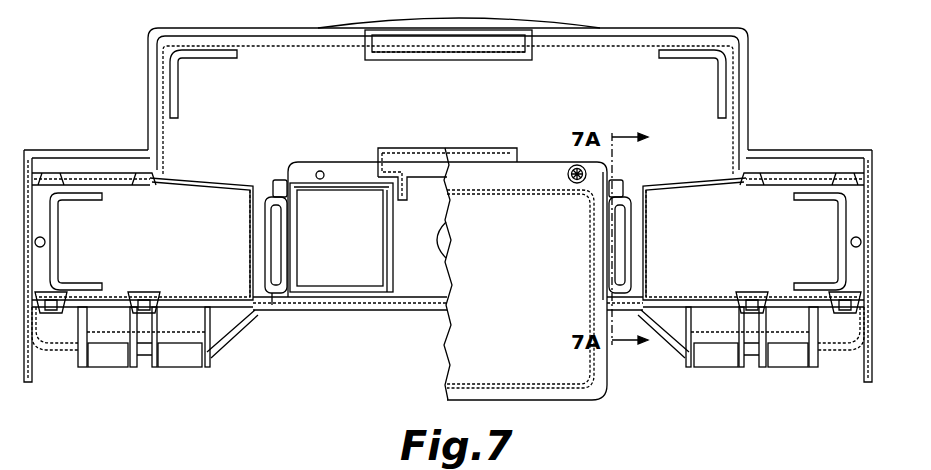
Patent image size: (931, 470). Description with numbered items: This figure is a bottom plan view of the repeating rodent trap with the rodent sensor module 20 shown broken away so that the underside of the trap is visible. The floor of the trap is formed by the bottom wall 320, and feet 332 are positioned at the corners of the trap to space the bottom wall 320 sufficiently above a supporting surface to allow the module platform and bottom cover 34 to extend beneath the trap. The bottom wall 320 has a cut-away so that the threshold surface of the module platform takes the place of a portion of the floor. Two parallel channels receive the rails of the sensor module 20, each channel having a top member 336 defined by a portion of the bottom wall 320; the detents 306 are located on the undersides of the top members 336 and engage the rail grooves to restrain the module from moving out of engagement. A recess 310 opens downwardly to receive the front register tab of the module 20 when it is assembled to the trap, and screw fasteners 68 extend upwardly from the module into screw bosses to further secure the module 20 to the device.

The sensor module 20 is at (580, 401).
The bottom cover 34 is at (444, 356).
The screw fasteners 68 is at (571, 168).
The detent 306 is at (275, 208).
The recess 310 is at (405, 150).
The bottom wall 320 is at (292, 119).
The feet 332 is at (213, 62).
The top member 336 is at (298, 188).